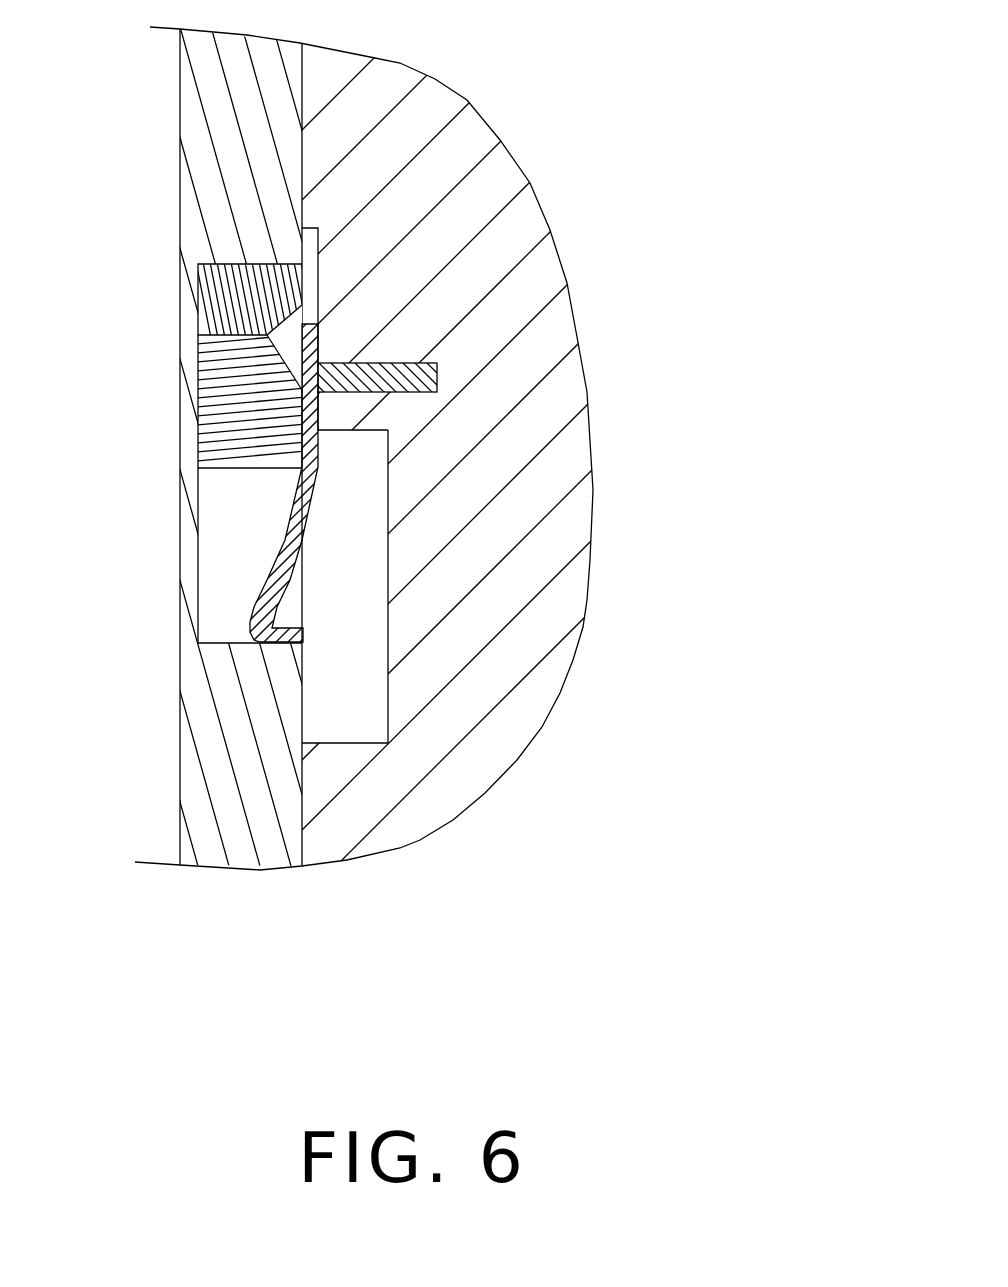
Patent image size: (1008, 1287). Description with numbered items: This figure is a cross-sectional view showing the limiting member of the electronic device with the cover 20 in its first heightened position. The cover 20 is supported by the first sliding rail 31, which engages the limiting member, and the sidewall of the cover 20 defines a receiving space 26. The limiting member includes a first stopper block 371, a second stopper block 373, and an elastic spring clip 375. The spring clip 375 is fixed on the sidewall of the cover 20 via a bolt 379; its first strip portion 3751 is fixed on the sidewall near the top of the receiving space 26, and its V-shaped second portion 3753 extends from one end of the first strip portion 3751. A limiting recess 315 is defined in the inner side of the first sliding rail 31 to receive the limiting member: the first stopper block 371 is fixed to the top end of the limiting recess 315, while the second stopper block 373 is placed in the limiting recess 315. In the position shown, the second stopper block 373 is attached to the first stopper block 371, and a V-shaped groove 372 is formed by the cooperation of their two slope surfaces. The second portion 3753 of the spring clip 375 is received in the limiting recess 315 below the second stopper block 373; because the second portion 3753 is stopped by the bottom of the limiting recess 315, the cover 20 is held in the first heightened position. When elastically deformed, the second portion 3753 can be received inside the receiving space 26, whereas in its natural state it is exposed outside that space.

The cover 20 is at (463, 773).
The receiving space 26 is at (352, 628).
The first sliding rail 31 is at (210, 728).
The limiting recess 315 is at (223, 523).
The first stopper block 371 is at (242, 283).
The V-shaped groove 372 is at (283, 342).
The second stopper block 373 is at (233, 428).
The spring clip 375 is at (434, 485).
The first strip portion 3751 is at (318, 413).
The second portion 3753 is at (277, 588).
The bolt 379 is at (440, 363).